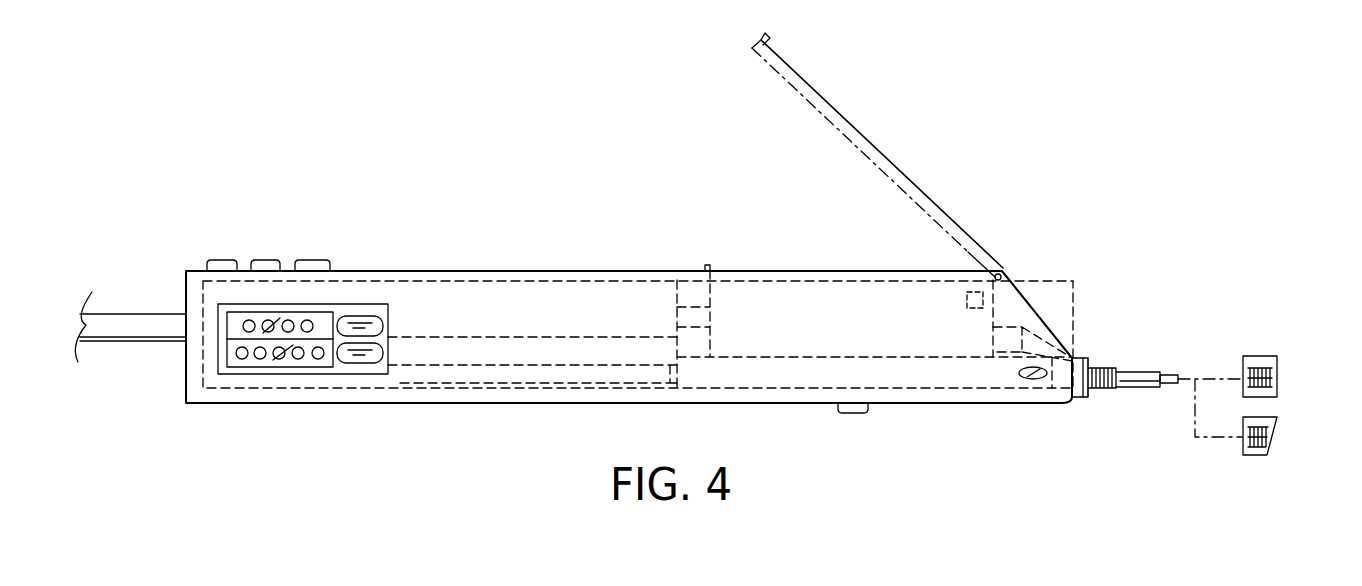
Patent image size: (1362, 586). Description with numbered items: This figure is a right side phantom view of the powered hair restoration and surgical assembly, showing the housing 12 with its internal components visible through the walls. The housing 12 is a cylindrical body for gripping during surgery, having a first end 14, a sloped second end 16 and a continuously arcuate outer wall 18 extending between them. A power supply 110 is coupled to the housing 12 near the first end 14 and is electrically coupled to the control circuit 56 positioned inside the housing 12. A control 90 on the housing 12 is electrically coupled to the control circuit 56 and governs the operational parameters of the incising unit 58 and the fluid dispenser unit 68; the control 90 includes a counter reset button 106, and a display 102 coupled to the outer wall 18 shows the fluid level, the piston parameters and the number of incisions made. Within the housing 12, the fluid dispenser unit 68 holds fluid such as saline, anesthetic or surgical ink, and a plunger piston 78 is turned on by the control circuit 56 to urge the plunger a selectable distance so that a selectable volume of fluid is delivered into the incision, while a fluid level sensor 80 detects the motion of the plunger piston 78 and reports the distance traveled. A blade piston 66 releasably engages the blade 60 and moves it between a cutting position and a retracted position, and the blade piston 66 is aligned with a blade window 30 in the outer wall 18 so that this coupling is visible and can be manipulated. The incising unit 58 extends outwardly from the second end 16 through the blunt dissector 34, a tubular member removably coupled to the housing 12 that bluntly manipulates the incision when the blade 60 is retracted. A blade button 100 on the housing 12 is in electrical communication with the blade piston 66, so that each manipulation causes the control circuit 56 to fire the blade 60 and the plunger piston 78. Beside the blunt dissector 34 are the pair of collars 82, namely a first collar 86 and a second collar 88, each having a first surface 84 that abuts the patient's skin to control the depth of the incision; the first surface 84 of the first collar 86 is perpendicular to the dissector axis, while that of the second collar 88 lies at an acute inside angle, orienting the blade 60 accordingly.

The housing 12 is at (262, 403).
The first end 14 is at (186, 284).
The second end 16 is at (1058, 333).
The outer wall 18 is at (498, 403).
The blade window 30 is at (1030, 381).
The blunt dissector 34 is at (1138, 387).
The control circuit 56 is at (362, 304).
The incising unit 58 is at (952, 399).
The blade 60 is at (1170, 375).
The blade piston 66 is at (798, 403).
The fluid dispenser unit 68 is at (792, 304).
The plunger piston 78 is at (693, 305).
The fluid level sensor 80 is at (970, 290).
The collars 82 is at (1270, 357).
The first surface 84 is at (1277, 365).
The first collar 86 is at (1287, 314).
The second collar 88 is at (1252, 457).
The control 90 is at (348, 377).
The blade button 100 is at (853, 413).
The display 102 is at (237, 367).
The counter reset button 106 is at (375, 357).
The power supply 110 is at (127, 341).